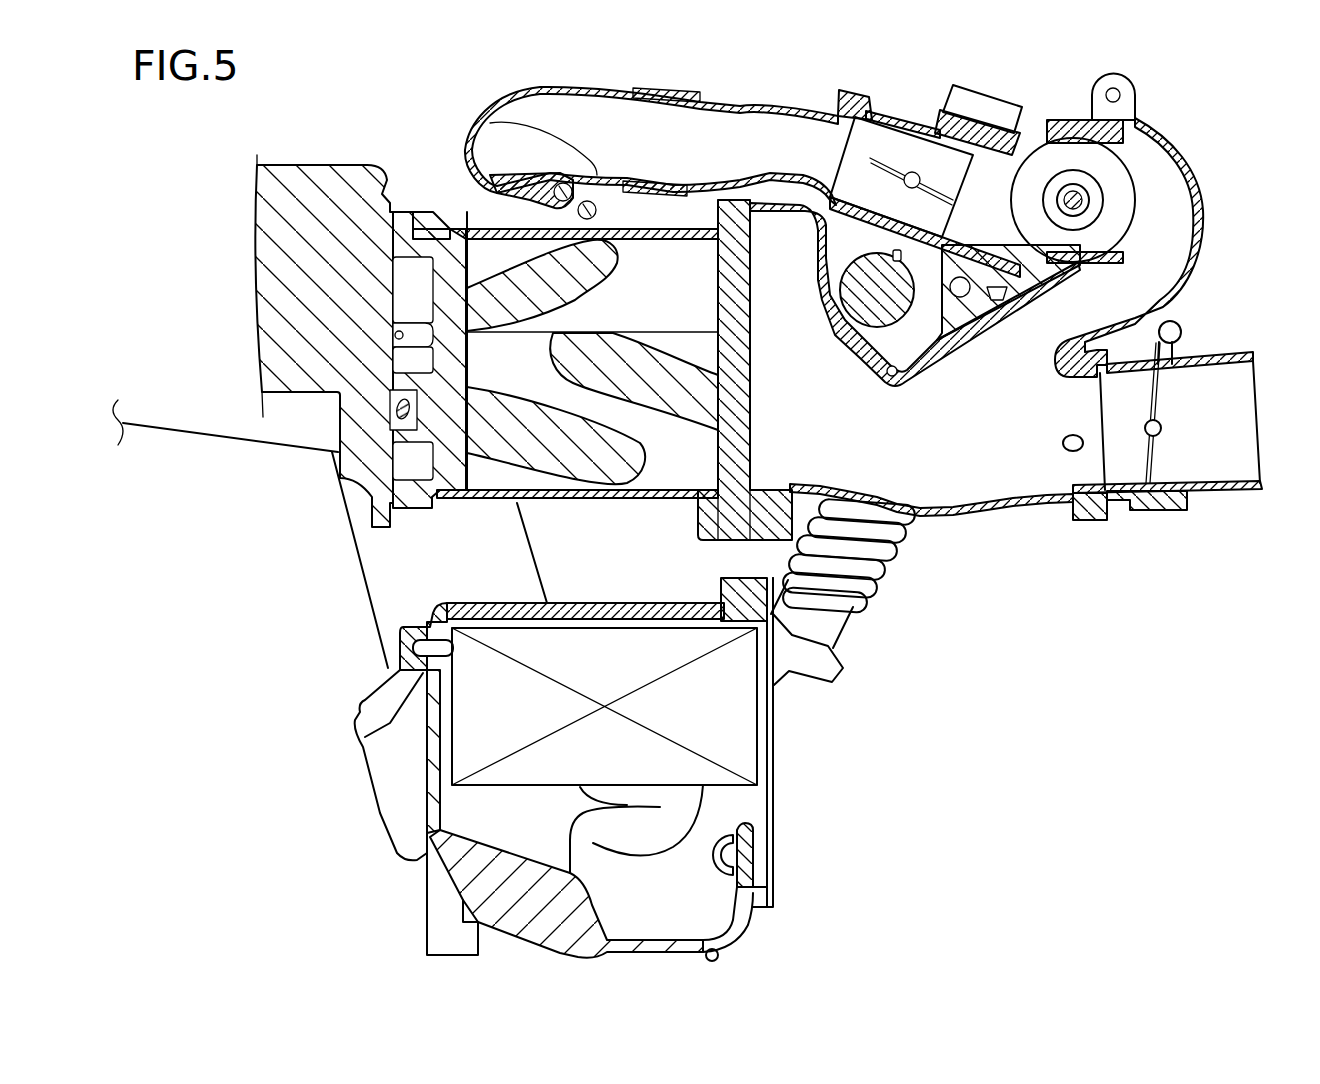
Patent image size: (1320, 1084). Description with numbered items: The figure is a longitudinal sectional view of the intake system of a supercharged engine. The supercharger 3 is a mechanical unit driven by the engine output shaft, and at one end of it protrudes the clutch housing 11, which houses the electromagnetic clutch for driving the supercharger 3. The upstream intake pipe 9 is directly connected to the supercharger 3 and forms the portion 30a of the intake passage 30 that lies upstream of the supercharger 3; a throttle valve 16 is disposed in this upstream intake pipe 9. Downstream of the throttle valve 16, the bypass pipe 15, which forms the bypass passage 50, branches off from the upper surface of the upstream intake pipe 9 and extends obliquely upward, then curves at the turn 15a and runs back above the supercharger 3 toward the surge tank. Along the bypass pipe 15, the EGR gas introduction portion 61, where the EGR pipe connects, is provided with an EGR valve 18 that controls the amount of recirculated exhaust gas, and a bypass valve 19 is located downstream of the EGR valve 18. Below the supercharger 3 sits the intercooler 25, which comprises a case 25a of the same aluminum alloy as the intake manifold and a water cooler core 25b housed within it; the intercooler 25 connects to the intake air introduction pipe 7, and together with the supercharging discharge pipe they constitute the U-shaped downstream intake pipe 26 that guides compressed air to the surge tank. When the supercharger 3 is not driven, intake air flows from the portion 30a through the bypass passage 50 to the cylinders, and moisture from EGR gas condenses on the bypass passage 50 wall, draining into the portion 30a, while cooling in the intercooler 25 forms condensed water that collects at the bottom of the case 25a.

The supercharger 3 is at (614, 500).
The intake air introduction pipe 7 is at (353, 550).
The upstream intake pipe 9 is at (947, 513).
The clutch housing 11 is at (213, 440).
The bypass pipe 15 is at (768, 88).
The turn 15a is at (1200, 223).
The throttle valve 16 is at (1163, 403).
The EGR valve 18 is at (1073, 185).
The bypass valve 19 is at (890, 157).
The intercooler 25 is at (423, 913).
The case 25a is at (420, 785).
The water cooler core 25b is at (739, 727).
The downstream intake pipe 26 is at (360, 643).
The intake passage 30 is at (1087, 465).
The portion of the intake passage upstream of the supercharger 30a is at (970, 465).
The bypass passage 50 is at (732, 128).
The EGR gas introduction portion 61 is at (1127, 197).